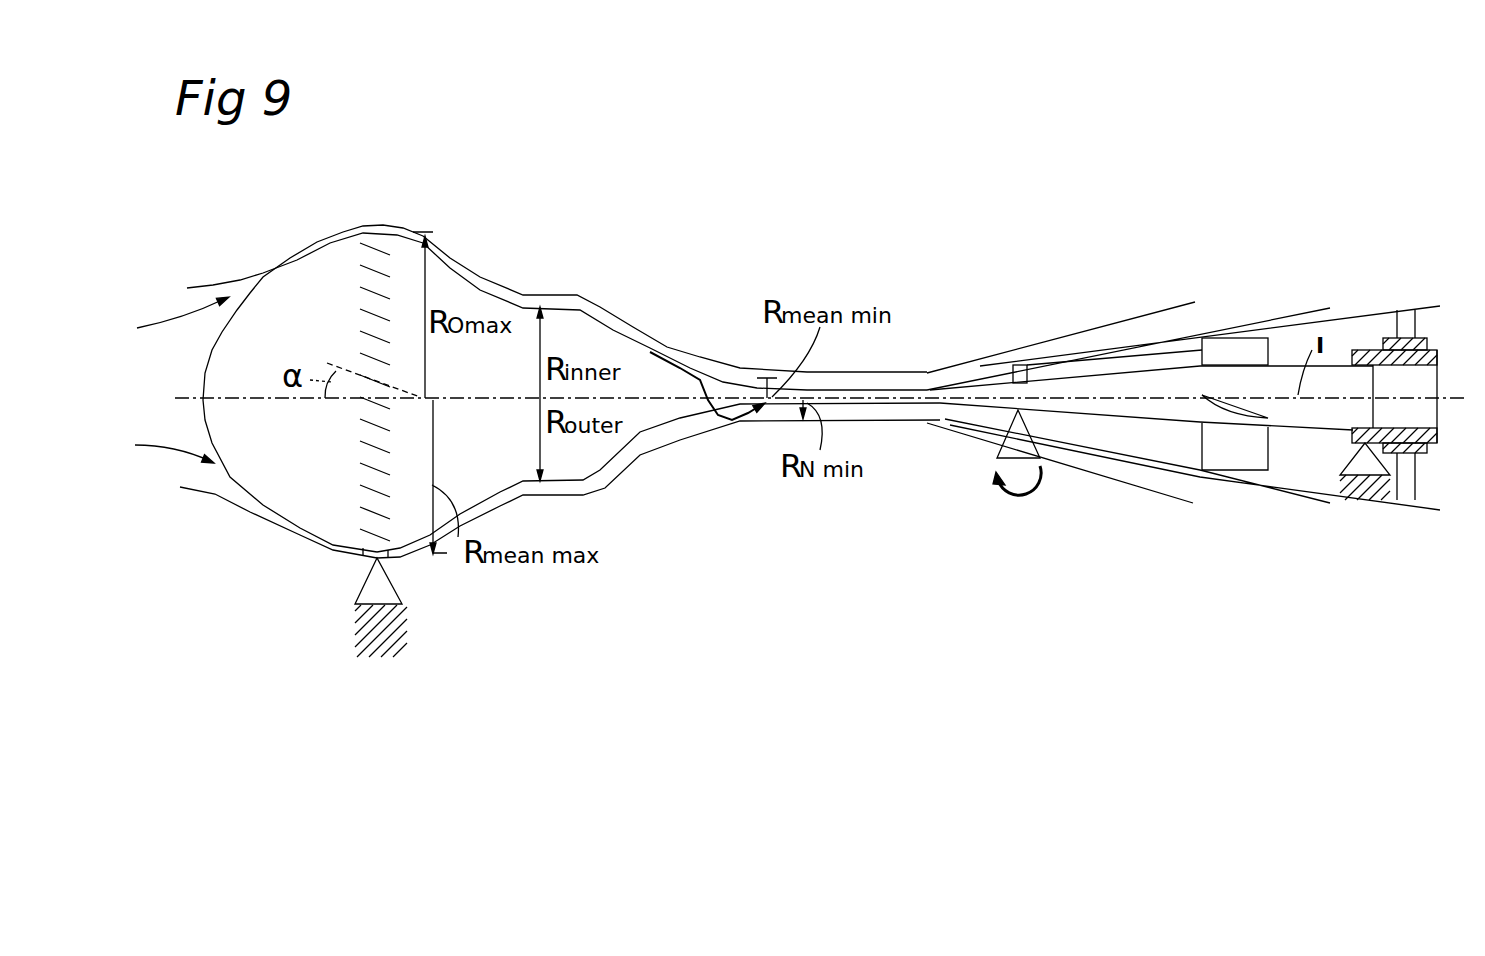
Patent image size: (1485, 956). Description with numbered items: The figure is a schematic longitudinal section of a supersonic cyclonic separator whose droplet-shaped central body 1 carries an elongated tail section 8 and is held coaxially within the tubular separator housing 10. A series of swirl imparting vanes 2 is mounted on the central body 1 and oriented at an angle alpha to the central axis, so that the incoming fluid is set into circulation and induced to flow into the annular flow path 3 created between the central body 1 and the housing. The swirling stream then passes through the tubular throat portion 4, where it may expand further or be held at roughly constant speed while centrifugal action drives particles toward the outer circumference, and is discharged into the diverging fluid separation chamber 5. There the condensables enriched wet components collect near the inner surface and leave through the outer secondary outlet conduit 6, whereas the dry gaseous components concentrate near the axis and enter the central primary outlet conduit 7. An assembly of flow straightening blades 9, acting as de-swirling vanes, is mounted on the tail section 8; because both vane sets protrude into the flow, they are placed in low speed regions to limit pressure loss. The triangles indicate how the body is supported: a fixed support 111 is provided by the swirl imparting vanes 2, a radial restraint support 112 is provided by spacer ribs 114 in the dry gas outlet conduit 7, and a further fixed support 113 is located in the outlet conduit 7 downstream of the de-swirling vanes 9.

The central body 1 is at (277, 300).
The swirl imparting vanes 2 is at (378, 405).
The annular flow path 3 is at (478, 268).
The tubular throat portion 4 is at (744, 383).
The diverging fluid separation chamber 5 is at (933, 425).
The outer secondary outlet conduit 6 is at (1113, 340).
The central primary outlet conduit 7 is at (1177, 440).
The elongate tail section 8 is at (1000, 392).
The flow straightening blades 9 is at (1250, 353).
The tubular separator housing 10 is at (683, 353).
The fixed support 111 is at (380, 587).
The radial restraint support 112 is at (1000, 462).
The fixed support 113 is at (1365, 463).
The spacer ribs 114 is at (1033, 367).